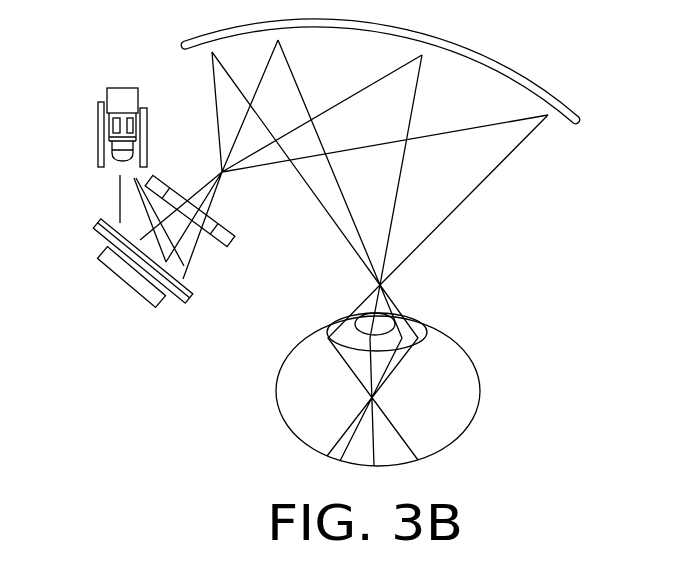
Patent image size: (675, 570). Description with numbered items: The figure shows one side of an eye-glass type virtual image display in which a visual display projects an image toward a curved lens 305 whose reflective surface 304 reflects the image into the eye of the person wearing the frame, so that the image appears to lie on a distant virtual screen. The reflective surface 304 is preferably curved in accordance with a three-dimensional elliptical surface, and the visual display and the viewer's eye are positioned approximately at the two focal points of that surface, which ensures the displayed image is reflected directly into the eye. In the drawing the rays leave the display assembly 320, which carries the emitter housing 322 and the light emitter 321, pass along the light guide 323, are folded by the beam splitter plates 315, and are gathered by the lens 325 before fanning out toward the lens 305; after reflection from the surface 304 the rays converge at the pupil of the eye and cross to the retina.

The reflective surface 304 is at (527, 90).
The lens 305 is at (490, 58).
The beam splitter plates 315 is at (192, 304).
The light source assembly 320 is at (93, 90).
The light emitter 321 is at (120, 160).
The emitter housing 322 is at (122, 102).
The light guide 323 is at (120, 200).
The lens 325 is at (230, 237).